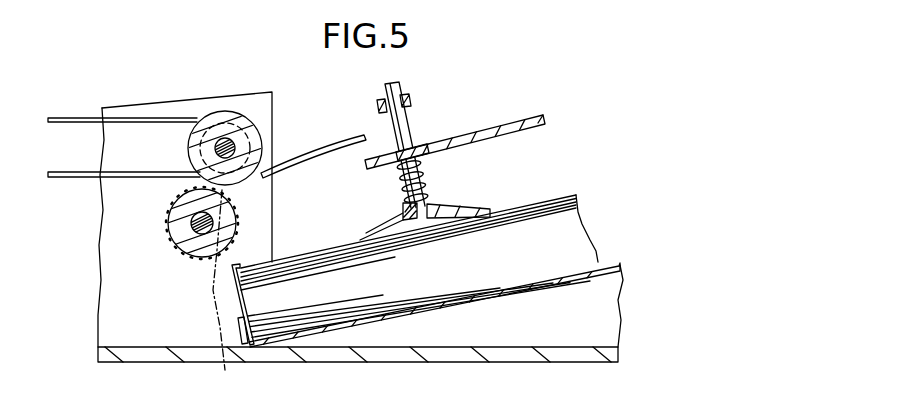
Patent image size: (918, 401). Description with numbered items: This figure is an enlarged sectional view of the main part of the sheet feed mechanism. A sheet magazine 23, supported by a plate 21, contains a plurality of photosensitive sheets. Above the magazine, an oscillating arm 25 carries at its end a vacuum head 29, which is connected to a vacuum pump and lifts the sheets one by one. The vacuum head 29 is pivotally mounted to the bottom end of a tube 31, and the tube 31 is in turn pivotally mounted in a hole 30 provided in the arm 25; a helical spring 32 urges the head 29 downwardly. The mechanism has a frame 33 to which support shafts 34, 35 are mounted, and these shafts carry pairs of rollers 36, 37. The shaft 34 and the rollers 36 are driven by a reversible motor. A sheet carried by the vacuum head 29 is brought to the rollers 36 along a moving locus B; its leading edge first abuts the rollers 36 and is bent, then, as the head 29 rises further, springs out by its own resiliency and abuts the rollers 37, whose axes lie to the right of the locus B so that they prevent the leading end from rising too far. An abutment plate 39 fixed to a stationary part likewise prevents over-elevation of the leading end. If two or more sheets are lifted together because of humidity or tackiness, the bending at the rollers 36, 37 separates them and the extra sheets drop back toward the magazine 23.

The plate 21 is at (378, 318).
The sheet magazine 23 is at (440, 302).
The oscillating arm 25 is at (505, 128).
The vacuum head 29 is at (458, 212).
The hole 30 is at (420, 157).
The tube 31 is at (390, 132).
The helical spring 32 is at (403, 180).
The frame 33 is at (140, 113).
The support shaft 34 is at (193, 225).
The support shaft 35 is at (227, 147).
The rollers 36 is at (195, 250).
The rollers 37 is at (222, 110).
The abutment plate 39 is at (298, 148).
The moving locus B is at (223, 293).